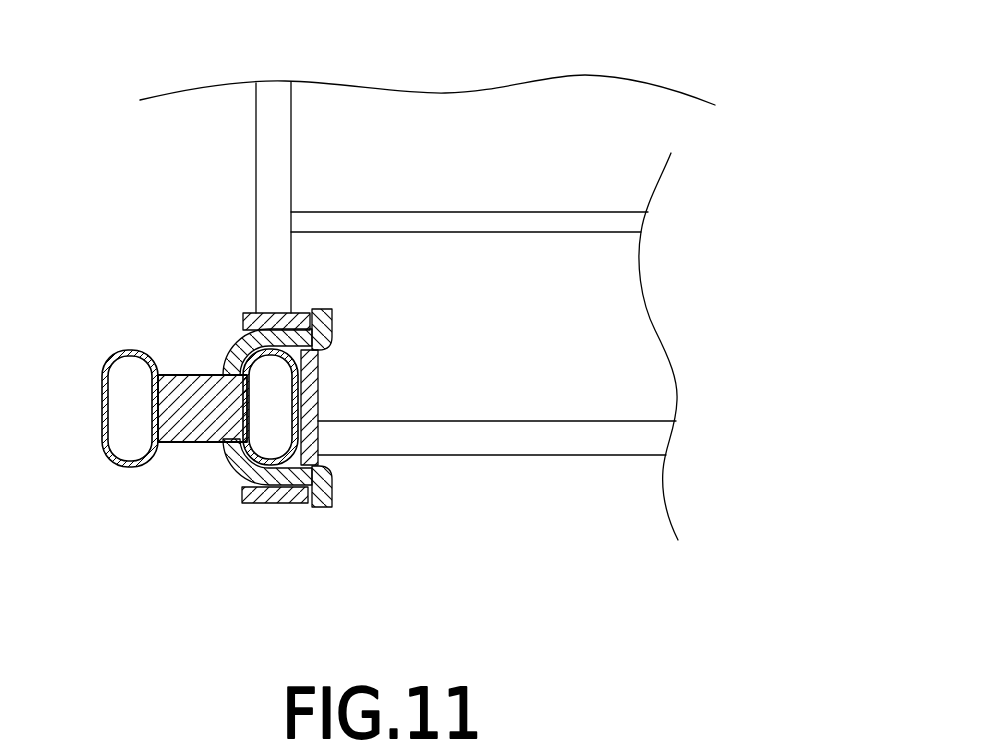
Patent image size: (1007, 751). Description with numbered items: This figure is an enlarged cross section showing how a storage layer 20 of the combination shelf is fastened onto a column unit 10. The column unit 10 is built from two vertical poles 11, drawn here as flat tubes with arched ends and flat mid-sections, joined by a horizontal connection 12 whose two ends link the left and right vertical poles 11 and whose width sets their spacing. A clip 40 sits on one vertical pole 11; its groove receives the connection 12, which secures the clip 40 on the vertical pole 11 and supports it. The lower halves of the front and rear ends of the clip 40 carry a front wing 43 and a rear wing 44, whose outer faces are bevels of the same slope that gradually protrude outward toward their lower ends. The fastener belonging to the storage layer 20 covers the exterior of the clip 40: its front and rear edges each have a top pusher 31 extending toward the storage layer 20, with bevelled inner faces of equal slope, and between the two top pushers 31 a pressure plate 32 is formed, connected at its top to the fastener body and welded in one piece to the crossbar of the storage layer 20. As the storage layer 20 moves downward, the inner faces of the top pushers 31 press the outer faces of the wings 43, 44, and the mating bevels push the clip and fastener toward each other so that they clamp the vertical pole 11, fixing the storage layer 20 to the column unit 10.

The column unit 10 is at (163, 468).
The vertical pole 11 is at (110, 455).
The connection 12 is at (203, 428).
The storage layer 20 is at (536, 228).
The top pusher 31 is at (275, 315).
The pressure plate 32 is at (312, 403).
The clip 40 is at (238, 345).
The front wing 43 is at (333, 485).
The rear wing 44 is at (332, 322).